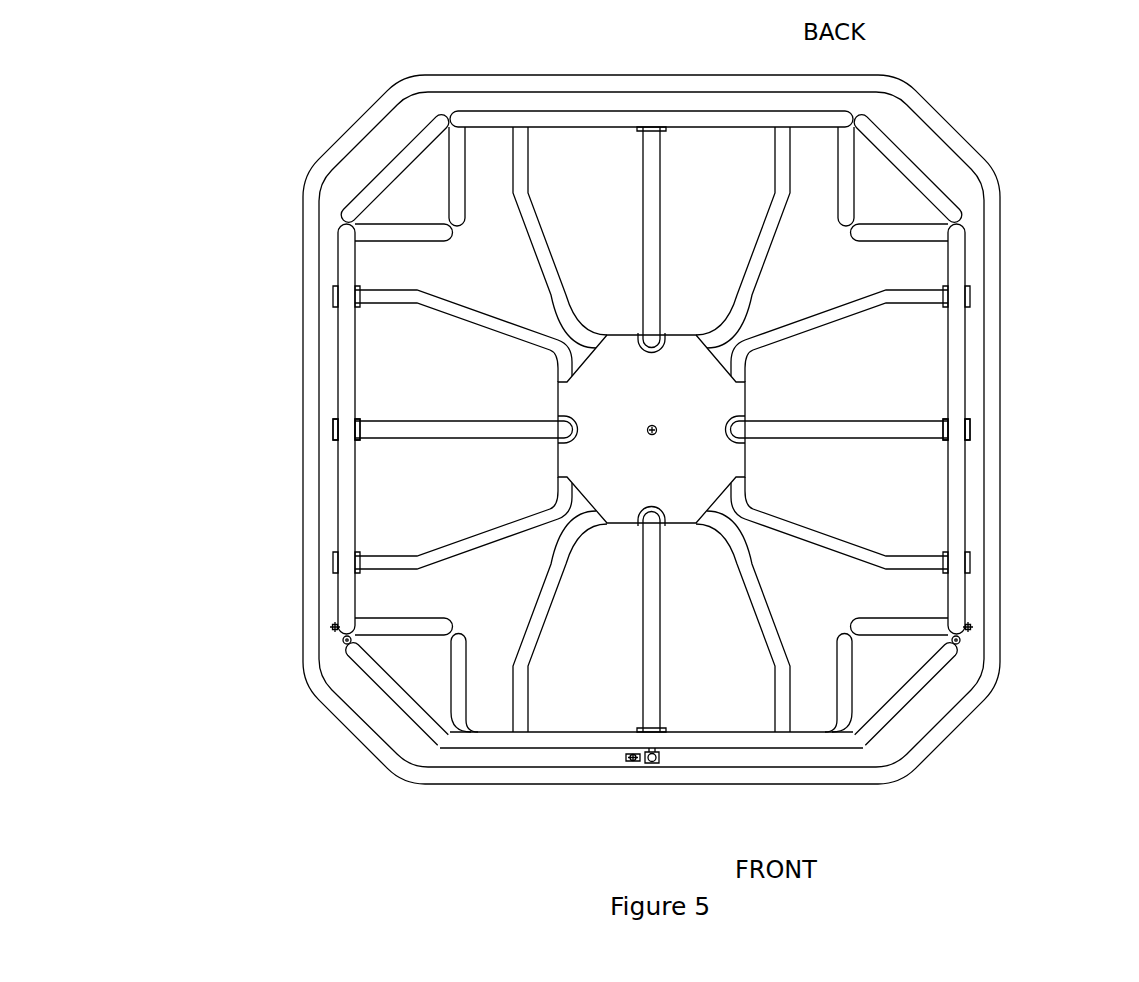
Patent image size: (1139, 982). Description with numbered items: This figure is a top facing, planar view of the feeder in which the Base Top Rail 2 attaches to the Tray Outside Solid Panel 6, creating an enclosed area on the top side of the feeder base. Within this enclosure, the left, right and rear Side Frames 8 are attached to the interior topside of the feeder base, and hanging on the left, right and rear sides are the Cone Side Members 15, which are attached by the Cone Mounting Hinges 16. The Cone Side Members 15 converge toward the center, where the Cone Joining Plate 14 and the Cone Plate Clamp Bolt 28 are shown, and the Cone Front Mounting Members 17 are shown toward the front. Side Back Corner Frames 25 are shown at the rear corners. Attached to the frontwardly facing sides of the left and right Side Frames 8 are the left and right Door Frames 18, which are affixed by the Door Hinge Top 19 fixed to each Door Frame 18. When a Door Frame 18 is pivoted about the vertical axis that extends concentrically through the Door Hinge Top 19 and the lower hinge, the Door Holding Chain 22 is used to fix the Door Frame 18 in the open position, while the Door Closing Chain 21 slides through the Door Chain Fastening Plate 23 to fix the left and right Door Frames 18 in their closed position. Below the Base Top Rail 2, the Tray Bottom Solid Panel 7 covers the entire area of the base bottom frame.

The Base Top Rail 2 is at (740, 85).
The Tray Outside Solid Panel 6 is at (521, 74).
The Tray Bottom Solid Panel 7 is at (605, 678).
The Side Frame 8 is at (677, 118).
The Cone Joining Plate 14 is at (627, 470).
The Cone Side Members 15 is at (545, 245).
The Cone Mounting Hinges 16 is at (965, 298).
The Cone Front Mounting Members 17 is at (455, 680).
The Door Frames 18 is at (437, 735).
The Door Hinge Top 19 is at (347, 642).
The Door Closing Chain 21 is at (660, 762).
The Door Holding Chain 22 is at (332, 627).
The Door Chain Fastening Plate 23 is at (641, 762).
The Side Back Corner Frames 25 is at (385, 183).
The Cone Plate Clamp Bolt 28 is at (654, 434).